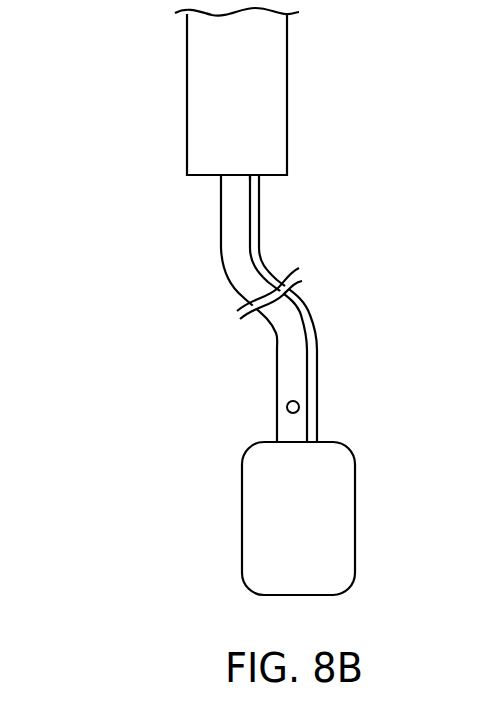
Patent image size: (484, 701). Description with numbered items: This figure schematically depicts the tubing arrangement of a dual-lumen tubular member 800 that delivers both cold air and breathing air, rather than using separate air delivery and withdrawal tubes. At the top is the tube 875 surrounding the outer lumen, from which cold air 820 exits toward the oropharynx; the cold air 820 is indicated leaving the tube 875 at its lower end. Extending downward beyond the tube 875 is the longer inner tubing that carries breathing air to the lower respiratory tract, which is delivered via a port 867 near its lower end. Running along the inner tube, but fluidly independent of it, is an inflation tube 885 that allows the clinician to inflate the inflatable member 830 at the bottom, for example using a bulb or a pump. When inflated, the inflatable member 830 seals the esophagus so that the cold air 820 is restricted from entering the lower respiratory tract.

The dual-lumen tubular member 800 is at (141, 97).
The tube surrounding the outer lumen 875 is at (276, 78).
The cold air 820 is at (272, 180).
The inflation tube 885 is at (308, 320).
The port 867 is at (298, 403).
The inflatable member 830 is at (340, 505).